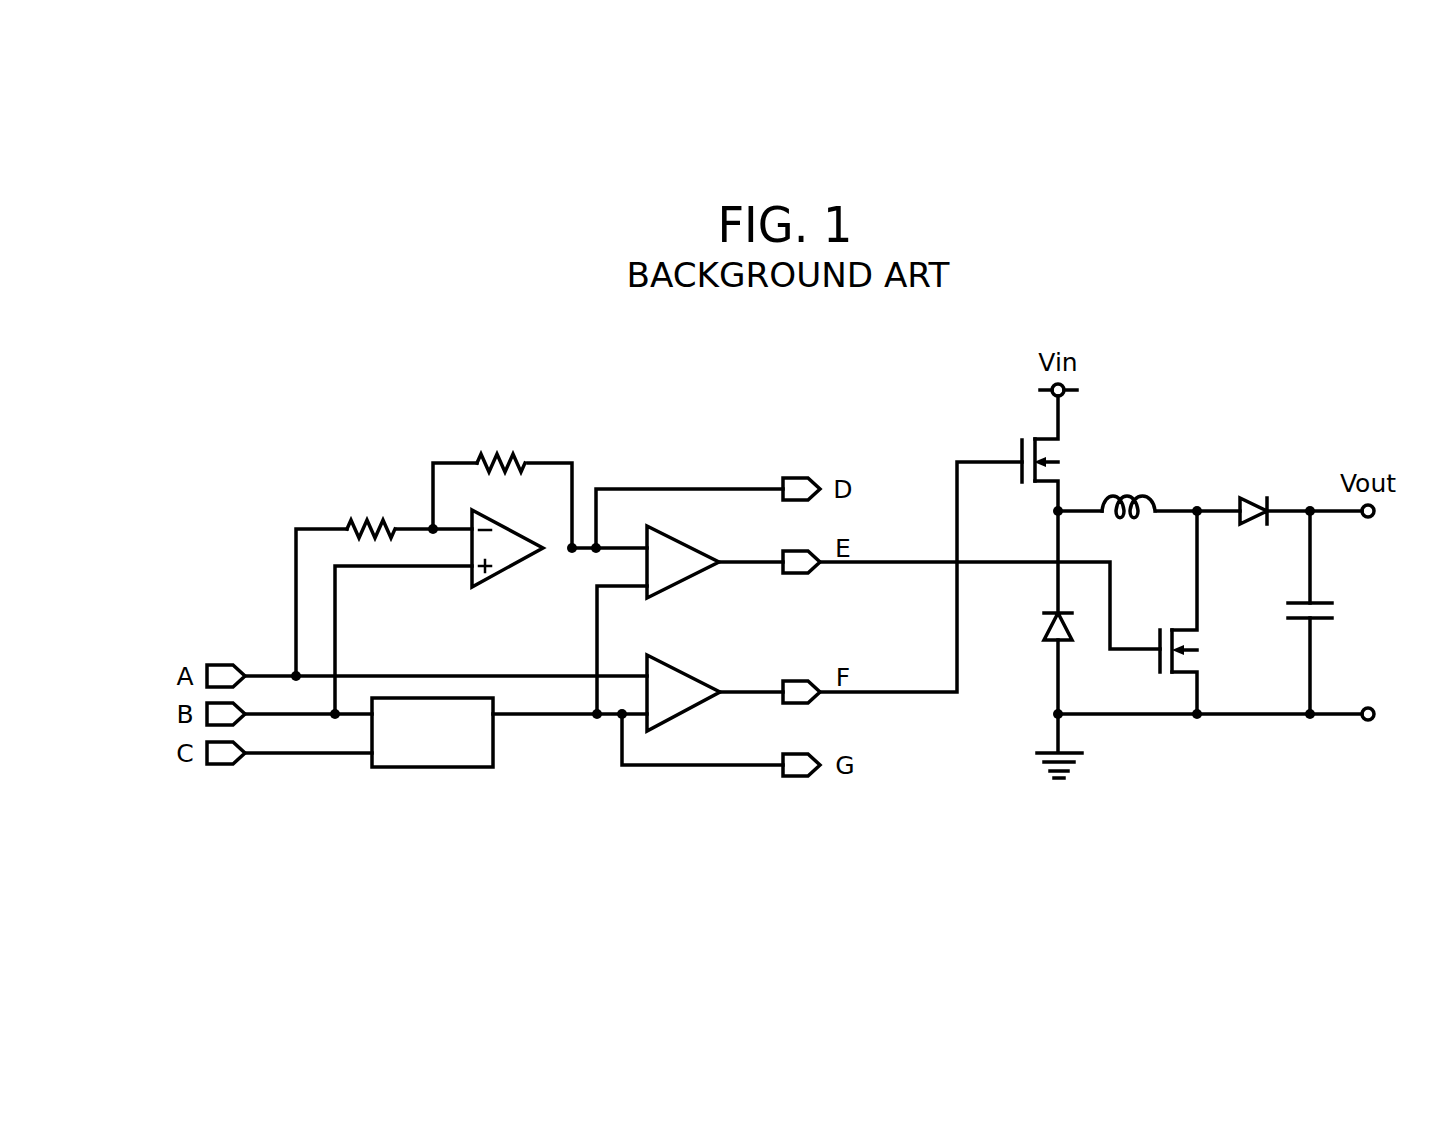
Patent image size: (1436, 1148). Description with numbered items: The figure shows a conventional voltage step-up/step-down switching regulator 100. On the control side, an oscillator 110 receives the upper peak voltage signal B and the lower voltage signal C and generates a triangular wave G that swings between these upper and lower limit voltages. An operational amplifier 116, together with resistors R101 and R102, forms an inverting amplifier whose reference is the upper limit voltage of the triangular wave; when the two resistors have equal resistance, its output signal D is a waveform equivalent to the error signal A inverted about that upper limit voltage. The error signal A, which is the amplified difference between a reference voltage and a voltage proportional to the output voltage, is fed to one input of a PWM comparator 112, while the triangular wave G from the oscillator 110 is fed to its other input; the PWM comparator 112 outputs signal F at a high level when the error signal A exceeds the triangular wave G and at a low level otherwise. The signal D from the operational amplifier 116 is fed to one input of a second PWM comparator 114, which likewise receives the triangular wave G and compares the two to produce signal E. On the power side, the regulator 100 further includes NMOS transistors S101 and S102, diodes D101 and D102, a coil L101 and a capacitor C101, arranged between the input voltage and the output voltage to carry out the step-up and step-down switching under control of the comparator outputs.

The voltage step-up/step-down switching regulator 100 is at (1237, 361).
The oscillator 110 is at (448, 767).
The PWM comparator 112 is at (686, 717).
The PWM comparator 114 is at (682, 587).
The operational amplifier 116 is at (508, 575).
The resistor R101 is at (375, 511).
The resistor R102 is at (506, 447).
The NMOS transistor S101 is at (1023, 445).
The NMOS transistor S102 is at (1161, 635).
The coil L101 is at (1130, 489).
The diode D101 is at (1025, 629).
The diode D102 is at (1257, 492).
The capacitor C101 is at (1349, 612).